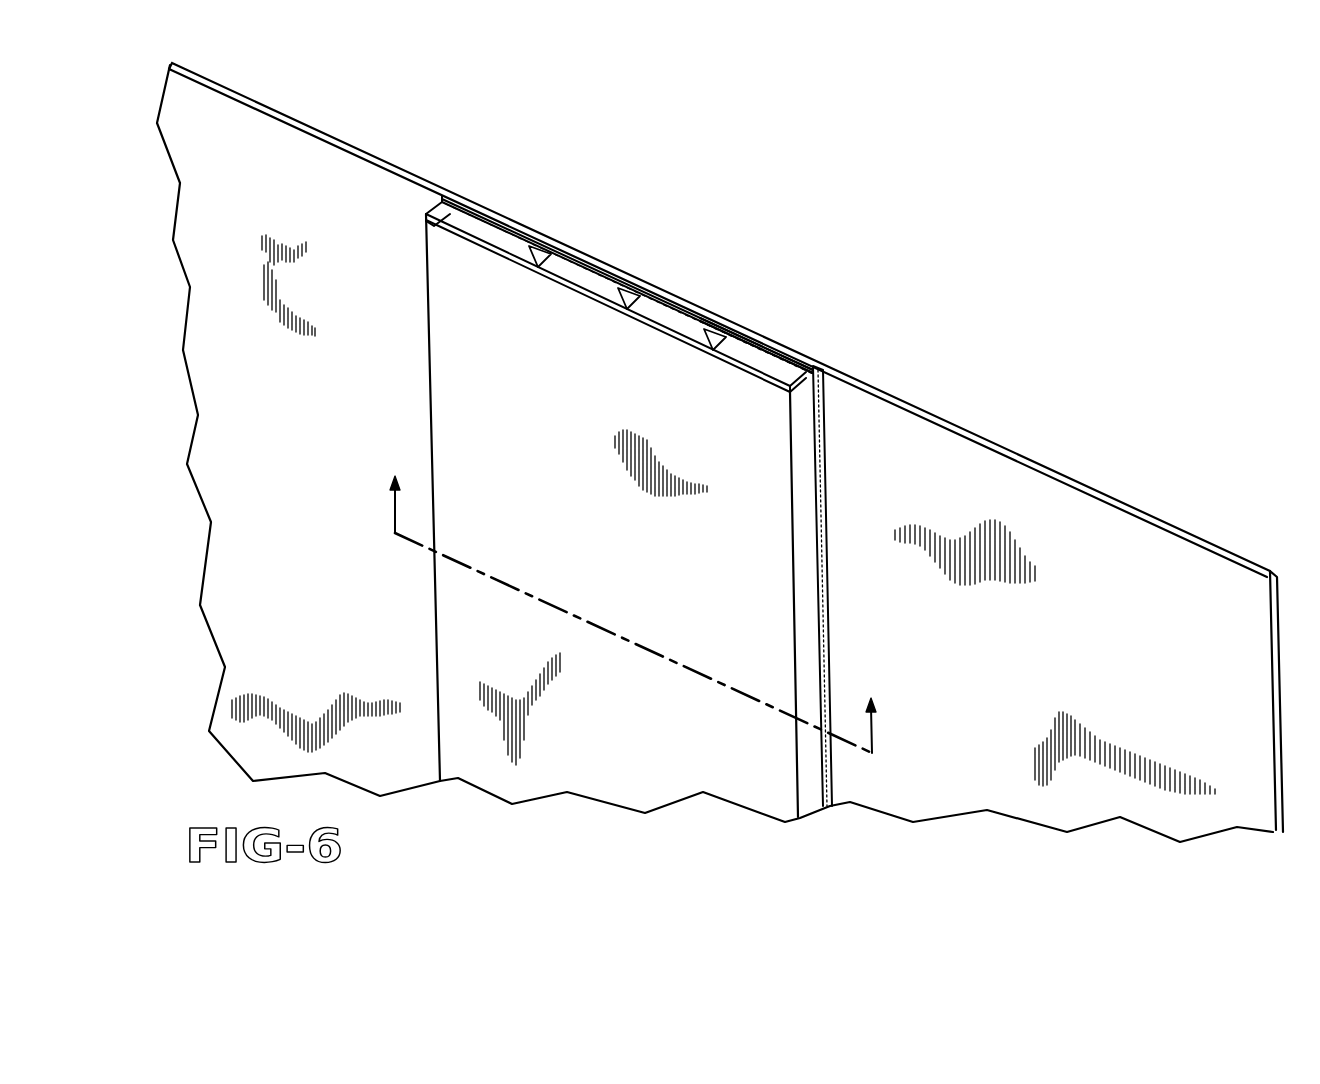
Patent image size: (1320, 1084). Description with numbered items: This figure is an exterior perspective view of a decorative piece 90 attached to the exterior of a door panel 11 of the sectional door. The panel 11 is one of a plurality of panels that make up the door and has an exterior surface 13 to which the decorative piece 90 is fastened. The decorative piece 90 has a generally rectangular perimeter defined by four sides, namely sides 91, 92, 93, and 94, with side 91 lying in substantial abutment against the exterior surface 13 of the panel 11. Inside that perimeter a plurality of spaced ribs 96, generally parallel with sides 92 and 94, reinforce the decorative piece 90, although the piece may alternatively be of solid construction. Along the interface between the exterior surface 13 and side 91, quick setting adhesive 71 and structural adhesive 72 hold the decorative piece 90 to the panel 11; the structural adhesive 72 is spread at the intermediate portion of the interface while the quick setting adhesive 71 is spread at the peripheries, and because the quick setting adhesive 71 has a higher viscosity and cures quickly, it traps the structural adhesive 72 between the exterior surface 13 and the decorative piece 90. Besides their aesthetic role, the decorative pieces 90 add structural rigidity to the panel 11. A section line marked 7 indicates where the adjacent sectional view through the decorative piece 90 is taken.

The panel 11 is at (1193, 622).
The exterior surface 13 is at (1102, 543).
The quick setting adhesive 71 is at (474, 211).
The structural adhesive 72 is at (672, 303).
The decorative piece 90 is at (466, 348).
The side 91 is at (748, 343).
The side 92 is at (430, 208).
The side 93 is at (463, 288).
The side 94 is at (805, 477).
The ribs 96 is at (537, 270).
The section line 7- 7 is at (632, 597).